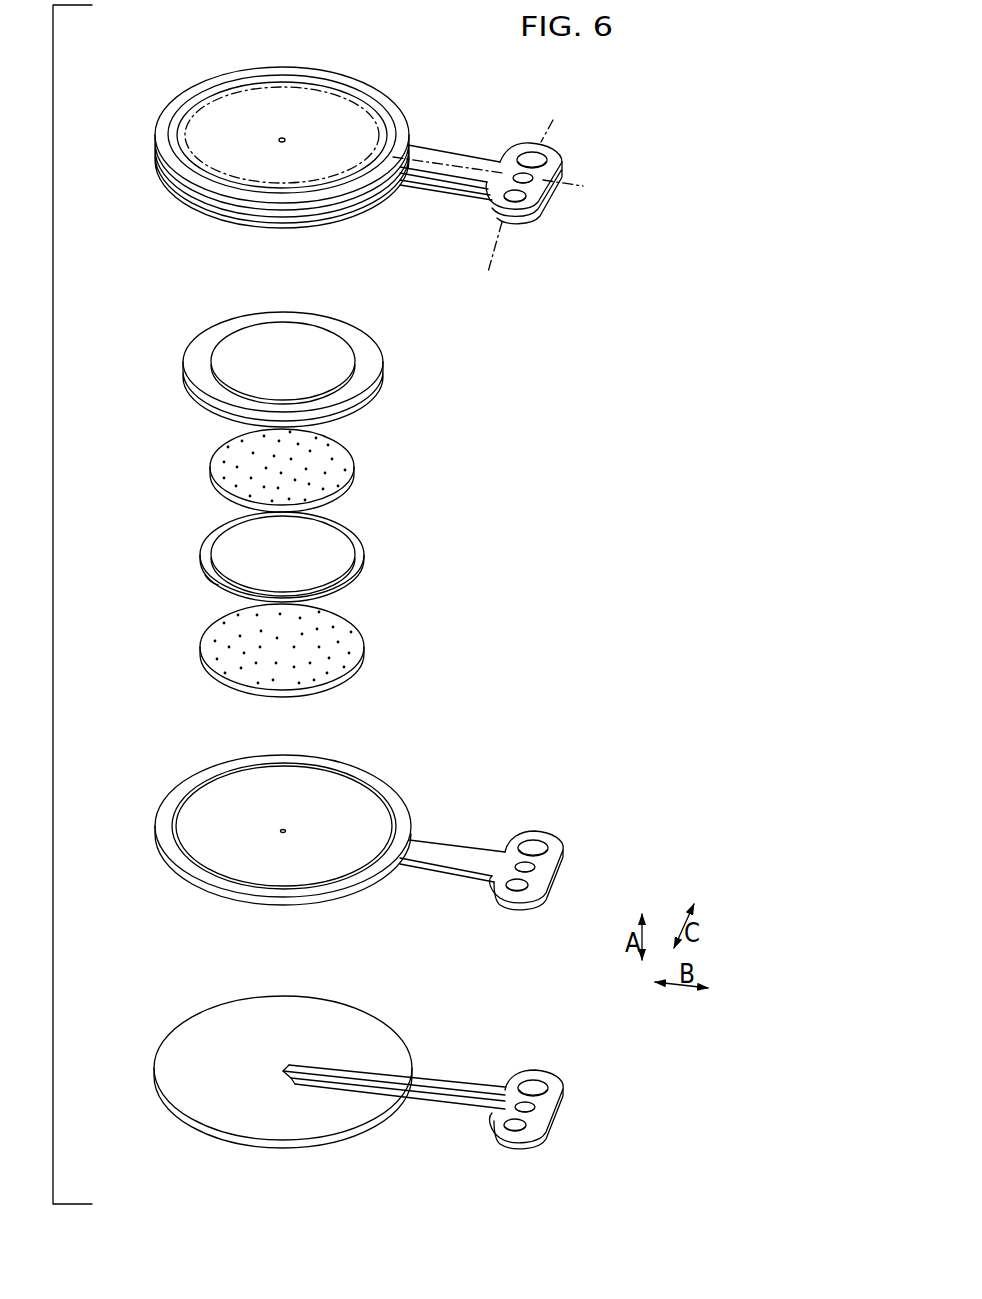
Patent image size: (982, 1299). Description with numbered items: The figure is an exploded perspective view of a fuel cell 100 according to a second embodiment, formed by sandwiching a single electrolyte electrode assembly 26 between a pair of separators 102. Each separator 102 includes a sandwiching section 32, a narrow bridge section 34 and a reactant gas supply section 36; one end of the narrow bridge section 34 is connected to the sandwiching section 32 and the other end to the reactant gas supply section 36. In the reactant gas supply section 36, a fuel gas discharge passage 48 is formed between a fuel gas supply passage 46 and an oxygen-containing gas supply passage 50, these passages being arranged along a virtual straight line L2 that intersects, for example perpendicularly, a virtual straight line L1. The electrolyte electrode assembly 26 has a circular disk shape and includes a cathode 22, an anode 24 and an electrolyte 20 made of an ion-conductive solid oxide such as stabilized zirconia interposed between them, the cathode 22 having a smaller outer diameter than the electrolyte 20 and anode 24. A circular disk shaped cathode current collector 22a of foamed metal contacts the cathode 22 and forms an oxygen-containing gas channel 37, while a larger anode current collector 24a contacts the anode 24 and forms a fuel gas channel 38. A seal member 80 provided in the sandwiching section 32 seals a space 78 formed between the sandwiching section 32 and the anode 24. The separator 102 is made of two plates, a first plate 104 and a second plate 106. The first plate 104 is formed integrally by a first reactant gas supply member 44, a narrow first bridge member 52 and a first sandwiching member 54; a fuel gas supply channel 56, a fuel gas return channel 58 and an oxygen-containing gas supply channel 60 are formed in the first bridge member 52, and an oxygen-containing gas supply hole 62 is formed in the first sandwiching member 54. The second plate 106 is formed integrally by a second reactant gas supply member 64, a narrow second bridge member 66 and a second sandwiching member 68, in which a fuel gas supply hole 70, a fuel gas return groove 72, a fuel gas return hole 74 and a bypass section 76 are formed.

The fuel cell 100 is at (637, 87).
The separator 102 is at (193, 78).
The sandwiching section 32 is at (391, 97).
The narrow bridge section 34 is at (446, 149).
The reactant gas supply section 36 is at (529, 139).
The oxygen-containing gas supply passage 50 is at (540, 150).
The fuel gas discharge passage 48 is at (488, 186).
The fuel gas supply passage 46 is at (517, 204).
The virtual straight line L1 is at (425, 189).
The virtual straight line L2 is at (515, 212).
The seal member 80 is at (357, 345).
The space 78 is at (230, 398).
The oxygen-containing gas channel 37 is at (338, 445).
The cathode current collector 22a is at (339, 461).
The electrolyte electrode assembly 26 is at (355, 519).
The electrolyte 20 is at (210, 540).
The cathode 22 is at (238, 540).
The anode 24 is at (213, 580).
The anode current collector 24a is at (348, 623).
The fuel gas channel 38 is at (335, 657).
The second plate 106 is at (201, 899).
The first plate 104 is at (191, 1009).
The second sandwiching member 68 is at (389, 789).
The fuel gas supply hole 70 is at (285, 829).
The fuel gas return hole 74 is at (393, 848).
The fuel gas return groove 72 is at (340, 892).
The bypass section 76 is at (400, 866).
The second bridge member 66 is at (447, 846).
The second reactant gas supply member 64 is at (517, 830).
The first sandwiching member 54 is at (381, 1036).
The first bridge member 52 is at (447, 1076).
The oxygen-containing gas supply channel 60 is at (323, 1066).
The oxygen-containing gas supply hole 62 is at (293, 1064).
The fuel gas return channel 58 is at (393, 1082).
The fuel gas supply channel 56 is at (313, 1080).
The first reactant gas supply member 44 is at (492, 1138).